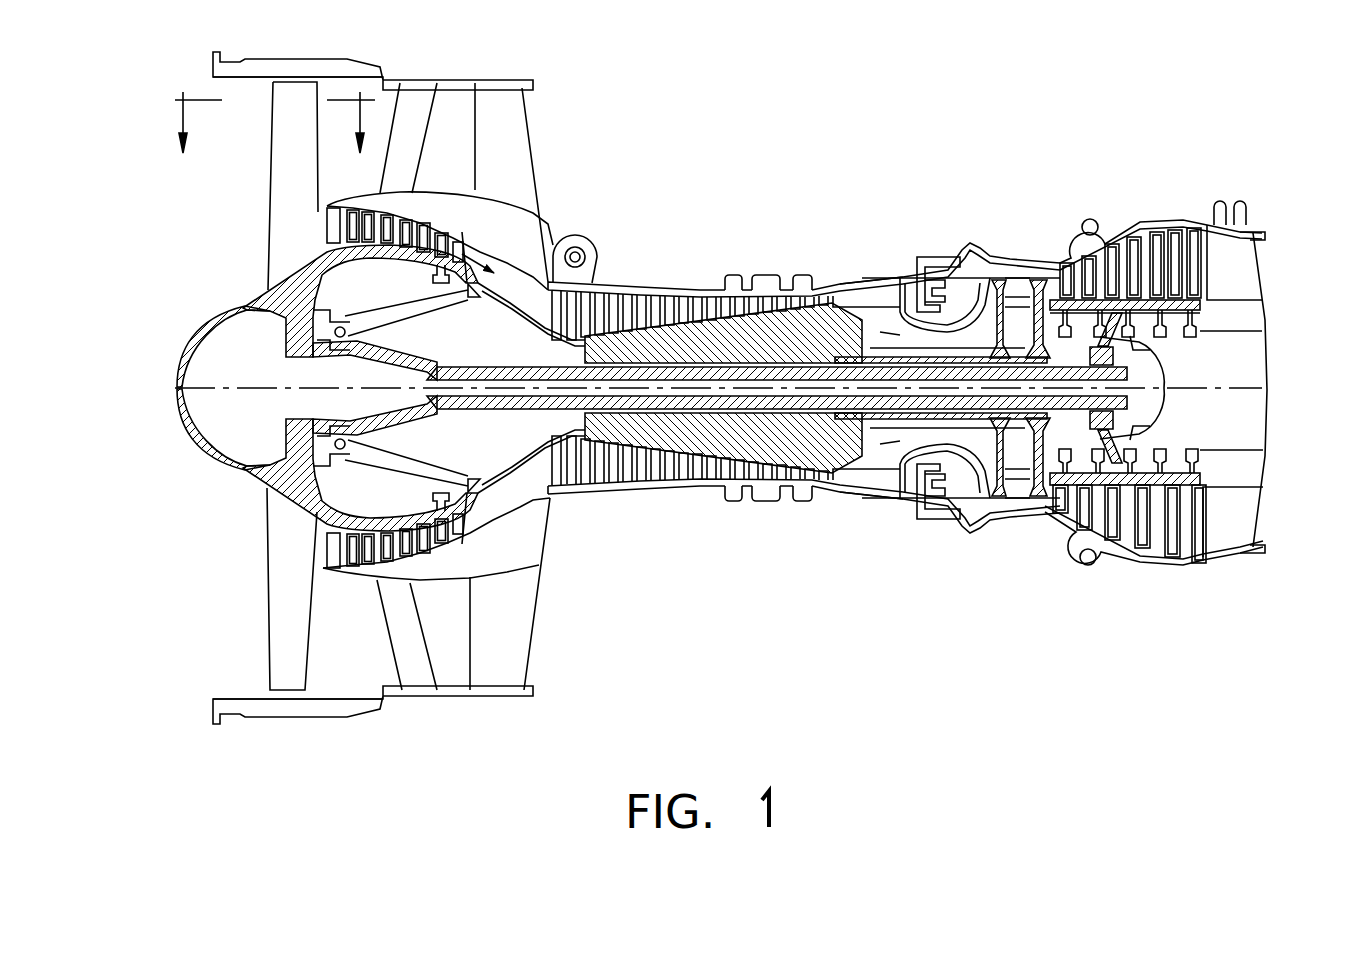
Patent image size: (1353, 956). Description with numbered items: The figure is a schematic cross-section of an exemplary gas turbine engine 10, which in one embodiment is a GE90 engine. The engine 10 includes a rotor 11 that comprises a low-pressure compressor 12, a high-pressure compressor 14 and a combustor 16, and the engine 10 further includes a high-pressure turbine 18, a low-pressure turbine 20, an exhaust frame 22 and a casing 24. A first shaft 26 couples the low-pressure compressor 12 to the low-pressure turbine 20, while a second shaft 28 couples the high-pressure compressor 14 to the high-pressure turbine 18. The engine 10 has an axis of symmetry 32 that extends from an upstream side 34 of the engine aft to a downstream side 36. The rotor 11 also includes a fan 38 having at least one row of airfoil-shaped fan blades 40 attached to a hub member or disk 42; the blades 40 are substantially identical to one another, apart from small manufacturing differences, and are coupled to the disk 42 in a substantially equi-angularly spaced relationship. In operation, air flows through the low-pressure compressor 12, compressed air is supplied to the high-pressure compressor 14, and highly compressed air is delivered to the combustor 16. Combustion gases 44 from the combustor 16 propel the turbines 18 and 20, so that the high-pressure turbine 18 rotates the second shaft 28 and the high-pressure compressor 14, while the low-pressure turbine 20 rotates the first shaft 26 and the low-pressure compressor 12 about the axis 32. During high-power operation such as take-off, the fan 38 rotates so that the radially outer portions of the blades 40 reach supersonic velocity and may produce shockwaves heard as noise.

The gas turbine engine 10 is at (975, 88).
The rotor 11 is at (170, 403).
The low-pressure compressor 12 is at (470, 218).
The high-pressure compressor 14 is at (641, 280).
The combustor 16 is at (947, 292).
The high-pressure turbine 18 is at (993, 240).
The low-pressure turbine 20 is at (1111, 213).
The exhaust frame 22 is at (1258, 221).
The casing 24 is at (1181, 221).
The first shaft 26 is at (1107, 373).
The second shaft 28 is at (897, 357).
The axis of symmetry 32 is at (1178, 394).
The upstream side 34 is at (159, 316).
The downstream side 36 is at (1254, 570).
The fan 38 is at (242, 556).
The fan blades 40 is at (305, 605).
The hub member or disk 42 is at (250, 507).
The combustion gases 44 is at (967, 497).